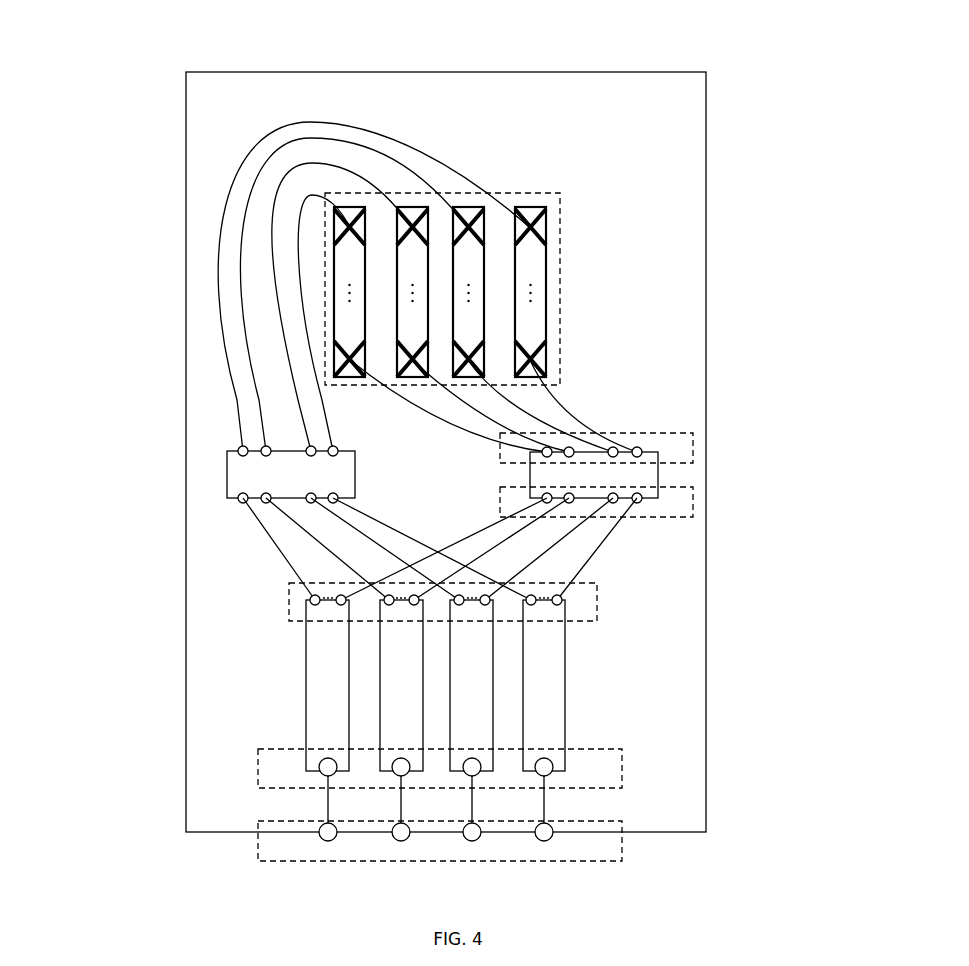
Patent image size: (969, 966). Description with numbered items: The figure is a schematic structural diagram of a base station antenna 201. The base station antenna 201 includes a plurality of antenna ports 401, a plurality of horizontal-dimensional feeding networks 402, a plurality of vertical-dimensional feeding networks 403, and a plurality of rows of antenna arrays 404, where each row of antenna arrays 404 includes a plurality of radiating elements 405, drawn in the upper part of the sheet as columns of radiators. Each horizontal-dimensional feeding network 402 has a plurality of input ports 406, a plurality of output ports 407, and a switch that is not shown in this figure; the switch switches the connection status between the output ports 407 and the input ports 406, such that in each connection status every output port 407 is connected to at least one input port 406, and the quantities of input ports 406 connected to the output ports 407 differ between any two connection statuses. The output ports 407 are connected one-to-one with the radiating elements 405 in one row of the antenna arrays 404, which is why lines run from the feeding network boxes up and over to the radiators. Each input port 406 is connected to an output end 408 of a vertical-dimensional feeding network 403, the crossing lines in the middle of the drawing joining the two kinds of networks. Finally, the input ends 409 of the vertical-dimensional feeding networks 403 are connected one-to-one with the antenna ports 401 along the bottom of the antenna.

The base station antenna 201 is at (525, 72).
The antenna array 404 is at (510, 259).
The radiating element 405 is at (515, 292).
The horizontal-dimensional feeding network 402 is at (742, 476).
The vertical-dimensional feeding network 403 is at (464, 670).
The output port 407 is at (693, 441).
The input port 406 is at (693, 511).
The output end 408 is at (597, 600).
The input end 409 is at (322, 763).
The antenna port 401 is at (622, 845).